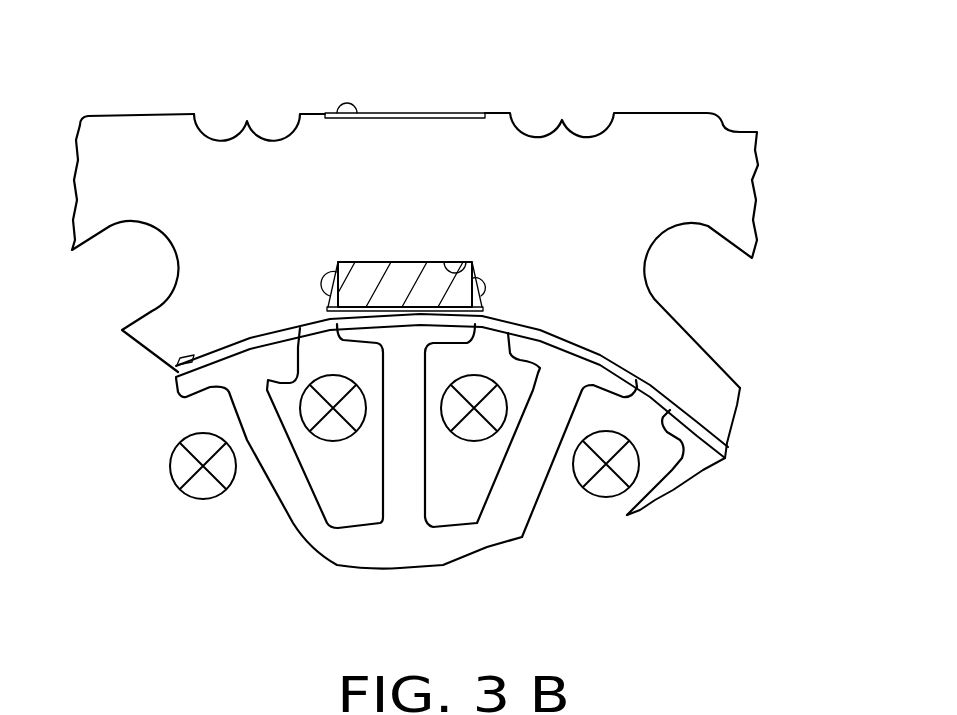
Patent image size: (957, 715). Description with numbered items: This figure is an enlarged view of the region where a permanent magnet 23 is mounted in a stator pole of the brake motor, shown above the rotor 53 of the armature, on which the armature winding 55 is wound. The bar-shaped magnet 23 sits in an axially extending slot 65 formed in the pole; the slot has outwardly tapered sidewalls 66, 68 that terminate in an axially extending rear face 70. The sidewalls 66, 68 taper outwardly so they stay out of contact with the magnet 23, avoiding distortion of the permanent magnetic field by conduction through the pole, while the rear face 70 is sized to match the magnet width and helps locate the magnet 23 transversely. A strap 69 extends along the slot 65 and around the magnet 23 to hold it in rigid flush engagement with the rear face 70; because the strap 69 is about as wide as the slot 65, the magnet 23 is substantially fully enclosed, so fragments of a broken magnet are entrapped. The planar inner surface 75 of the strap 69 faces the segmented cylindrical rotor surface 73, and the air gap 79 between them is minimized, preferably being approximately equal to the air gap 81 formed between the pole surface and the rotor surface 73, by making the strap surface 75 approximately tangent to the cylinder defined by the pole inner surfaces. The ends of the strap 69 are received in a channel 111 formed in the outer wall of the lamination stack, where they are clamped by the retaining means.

The permanent magnet 23 is at (365, 275).
The rotor 53 is at (513, 503).
The armature winding 55 is at (608, 478).
The slot 65 is at (290, 273).
The sidewall 66 is at (330, 298).
The sidewall 68 is at (493, 292).
The strap 69 is at (458, 110).
The rear face 70 is at (472, 265).
The rotor surface 73 is at (176, 370).
The inner surface 75 is at (340, 268).
The air gap 79 is at (602, 352).
The air gap 81 is at (697, 423).
The channel 111 is at (337, 117).